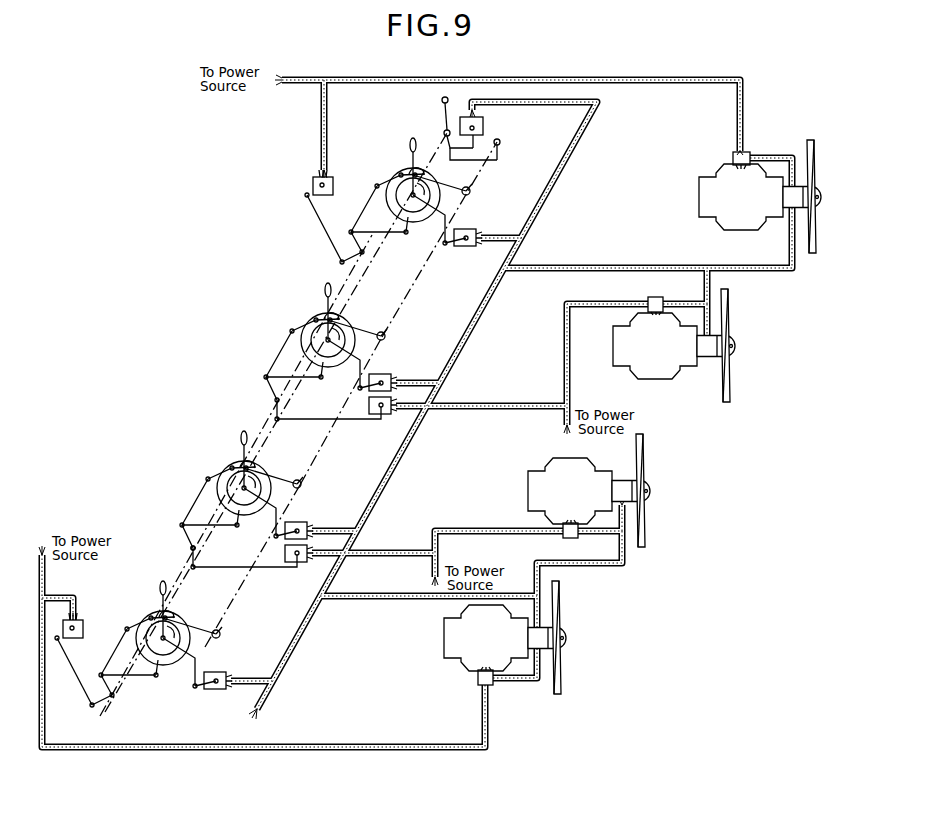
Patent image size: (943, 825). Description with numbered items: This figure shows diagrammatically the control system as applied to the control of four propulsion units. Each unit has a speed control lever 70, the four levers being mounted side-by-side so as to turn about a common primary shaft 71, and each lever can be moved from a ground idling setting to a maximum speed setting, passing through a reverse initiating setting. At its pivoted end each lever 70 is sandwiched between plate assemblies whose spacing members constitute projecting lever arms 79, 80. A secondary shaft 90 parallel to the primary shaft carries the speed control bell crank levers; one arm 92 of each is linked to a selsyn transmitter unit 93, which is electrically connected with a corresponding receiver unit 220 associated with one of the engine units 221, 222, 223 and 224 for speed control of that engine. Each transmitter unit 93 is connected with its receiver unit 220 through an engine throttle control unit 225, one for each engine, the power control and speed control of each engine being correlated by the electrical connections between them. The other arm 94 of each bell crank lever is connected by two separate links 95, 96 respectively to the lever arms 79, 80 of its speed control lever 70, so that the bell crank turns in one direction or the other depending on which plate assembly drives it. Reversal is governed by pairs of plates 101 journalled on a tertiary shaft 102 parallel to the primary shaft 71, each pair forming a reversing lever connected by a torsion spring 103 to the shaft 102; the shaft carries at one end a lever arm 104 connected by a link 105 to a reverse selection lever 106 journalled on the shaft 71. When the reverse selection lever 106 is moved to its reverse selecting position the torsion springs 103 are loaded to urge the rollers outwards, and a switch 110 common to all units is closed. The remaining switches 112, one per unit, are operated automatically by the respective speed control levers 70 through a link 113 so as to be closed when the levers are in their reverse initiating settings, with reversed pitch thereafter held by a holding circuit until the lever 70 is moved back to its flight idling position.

The speed control lever 70 is at (160, 586).
The primary shaft 71 is at (309, 455).
The lever arm 79 is at (156, 678).
The lever arm 80 is at (140, 615).
The secondary shaft 90 is at (109, 701).
The arm of bell crank lever 92 is at (94, 708).
The selsyn transmitter unit 93 is at (300, 565).
The arm of bell crank lever 94 is at (102, 670).
The link 95 is at (147, 677).
The link 96 is at (121, 630).
The plates 101 is at (214, 612).
The tertiary shaft 102 is at (228, 600).
The torsion spring 103 is at (221, 634).
The lever arm 104 is at (499, 146).
The link 105 is at (490, 160).
The reverse selection lever 106 is at (443, 113).
The switch 110 is at (486, 127).
The switch 112 is at (298, 521).
The link 113 is at (198, 666).
The receiver unit 220 is at (804, 182).
The engine unit 221 is at (464, 638).
The engine unit 222 is at (544, 495).
The engine unit 223 is at (632, 349).
The engine unit 224 is at (716, 201).
The engine throttle control unit 225 is at (733, 155).